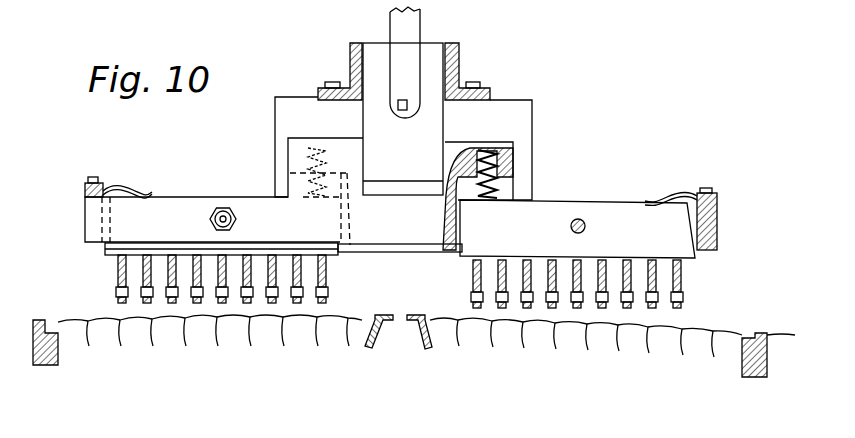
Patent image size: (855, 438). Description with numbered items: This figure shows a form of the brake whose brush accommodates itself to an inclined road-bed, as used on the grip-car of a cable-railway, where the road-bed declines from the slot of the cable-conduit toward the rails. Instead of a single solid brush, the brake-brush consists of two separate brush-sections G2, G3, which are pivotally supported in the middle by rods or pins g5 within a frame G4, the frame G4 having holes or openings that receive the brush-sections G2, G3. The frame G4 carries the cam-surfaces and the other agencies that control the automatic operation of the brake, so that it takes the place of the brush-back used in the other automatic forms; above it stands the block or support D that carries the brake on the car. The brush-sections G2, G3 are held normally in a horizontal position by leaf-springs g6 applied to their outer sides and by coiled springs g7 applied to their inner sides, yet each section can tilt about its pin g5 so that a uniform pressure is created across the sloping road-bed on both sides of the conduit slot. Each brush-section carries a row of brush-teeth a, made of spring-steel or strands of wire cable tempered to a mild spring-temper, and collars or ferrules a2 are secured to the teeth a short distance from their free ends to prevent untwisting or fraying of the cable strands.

The block or support D is at (403, 103).
The brush-section G2 is at (217, 201).
The brush-section G3 is at (603, 211).
The frame G4 is at (398, 233).
The rods or pins g5 is at (236, 219).
The leaf-springs g6 is at (120, 186).
The coiled springs g7 is at (558, 160).
The collars or ferrules a2 is at (730, 265).
The brush-teeth a is at (118, 278).